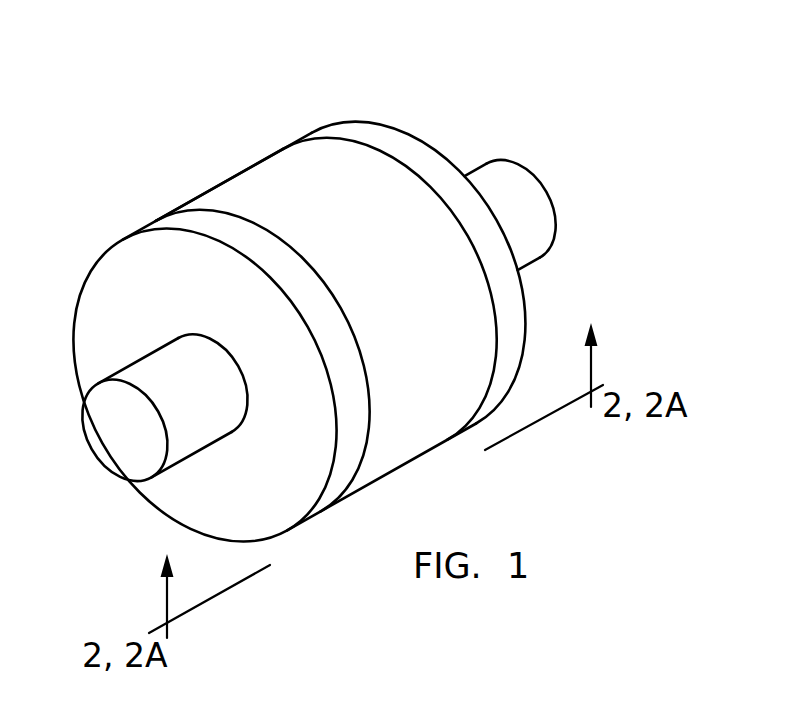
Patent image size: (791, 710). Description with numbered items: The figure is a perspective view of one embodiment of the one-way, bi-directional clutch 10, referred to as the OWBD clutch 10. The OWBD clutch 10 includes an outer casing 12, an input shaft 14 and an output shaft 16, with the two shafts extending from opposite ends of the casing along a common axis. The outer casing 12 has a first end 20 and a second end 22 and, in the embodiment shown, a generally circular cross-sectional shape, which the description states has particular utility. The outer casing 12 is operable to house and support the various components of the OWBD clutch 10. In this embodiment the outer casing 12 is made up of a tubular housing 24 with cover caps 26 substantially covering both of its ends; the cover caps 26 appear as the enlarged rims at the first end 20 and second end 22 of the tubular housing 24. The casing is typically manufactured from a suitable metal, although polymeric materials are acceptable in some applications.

The one-way, bi-directional clutch 10 is at (211, 129).
The outer casing 12 is at (291, 102).
The input shaft 14 is at (502, 182).
The output shaft 16 is at (160, 370).
The first end 20 is at (414, 137).
The second end 22 is at (118, 264).
The tubular housing 24 is at (233, 202).
The cover caps 26 is at (178, 222).